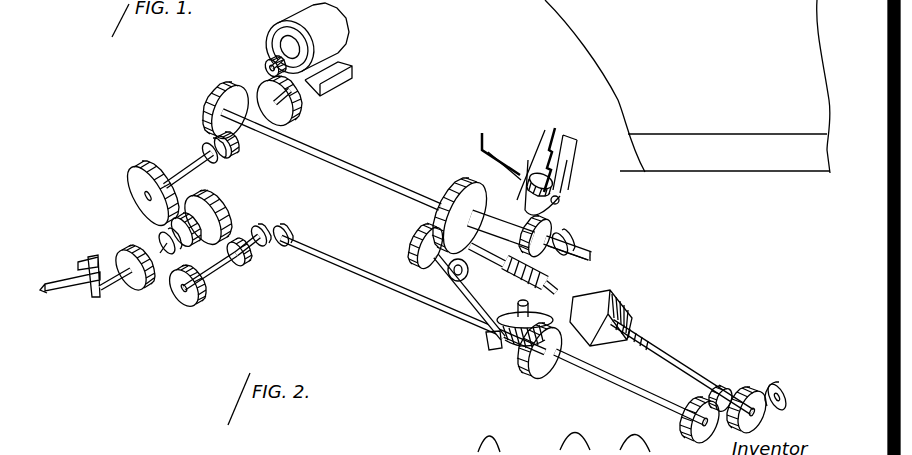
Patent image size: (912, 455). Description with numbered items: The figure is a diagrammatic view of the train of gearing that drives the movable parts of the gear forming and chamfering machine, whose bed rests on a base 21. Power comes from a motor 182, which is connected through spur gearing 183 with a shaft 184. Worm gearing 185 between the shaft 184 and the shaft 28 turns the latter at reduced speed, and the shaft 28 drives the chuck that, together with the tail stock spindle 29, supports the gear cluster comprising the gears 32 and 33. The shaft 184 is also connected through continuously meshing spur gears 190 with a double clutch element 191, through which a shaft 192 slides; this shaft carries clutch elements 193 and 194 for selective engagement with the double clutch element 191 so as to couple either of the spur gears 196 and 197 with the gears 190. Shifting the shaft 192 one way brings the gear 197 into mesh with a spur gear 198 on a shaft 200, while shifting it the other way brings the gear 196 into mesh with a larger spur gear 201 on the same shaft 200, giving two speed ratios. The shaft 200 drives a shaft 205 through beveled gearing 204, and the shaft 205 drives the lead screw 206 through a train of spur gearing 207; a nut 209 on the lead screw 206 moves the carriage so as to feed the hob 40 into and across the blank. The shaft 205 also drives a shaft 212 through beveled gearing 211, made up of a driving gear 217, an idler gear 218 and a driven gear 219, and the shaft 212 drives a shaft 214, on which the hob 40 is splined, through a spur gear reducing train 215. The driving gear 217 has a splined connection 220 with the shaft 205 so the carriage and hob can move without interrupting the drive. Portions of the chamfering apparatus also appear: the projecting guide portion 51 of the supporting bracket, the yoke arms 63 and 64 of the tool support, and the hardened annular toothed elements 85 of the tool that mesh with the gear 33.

The base 21 is at (618, 55).
The shaft 28 is at (357, 163).
The spindle 29 is at (585, 253).
The gear 32 is at (465, 182).
The gear 33 is at (548, 227).
The hob 40 is at (557, 275).
The downwardly and forwardly projecting portion 51 is at (531, 119).
The arm of tool support yoke 63 is at (557, 130).
The arm of tool support yoke 64 is at (573, 165).
The hardened annular elements 85 is at (545, 190).
The motor 182 is at (328, 38).
The spur gearing 183 is at (266, 73).
The shaft 184 is at (183, 172).
The worm gearing 185 is at (232, 157).
The spur gears 190 is at (150, 218).
The double clutch element 191 is at (168, 262).
The shaft 192 is at (132, 288).
The clutch element 193 is at (152, 290).
The clutch element 194 is at (212, 222).
The spur gear 196 is at (117, 252).
The spur gear 197 is at (213, 200).
The spur gear 198 is at (243, 262).
The shaft 200 is at (230, 280).
The spur gear 201 is at (195, 307).
The beveled gearing 204 is at (280, 226).
The shaft 205 is at (347, 262).
The lead screw 206 is at (673, 348).
The train of spur gearing 207 is at (742, 395).
The nut 209 is at (633, 312).
The beveled gearing 211 is at (515, 355).
The shaft 212 is at (467, 293).
The shaft 214 is at (462, 275).
The spur gear reducing train 215 is at (424, 235).
The driving gear 217 is at (542, 365).
The idler gear 218 is at (490, 342).
The driven gear 219 is at (500, 348).
The splined connection 220 is at (560, 352).